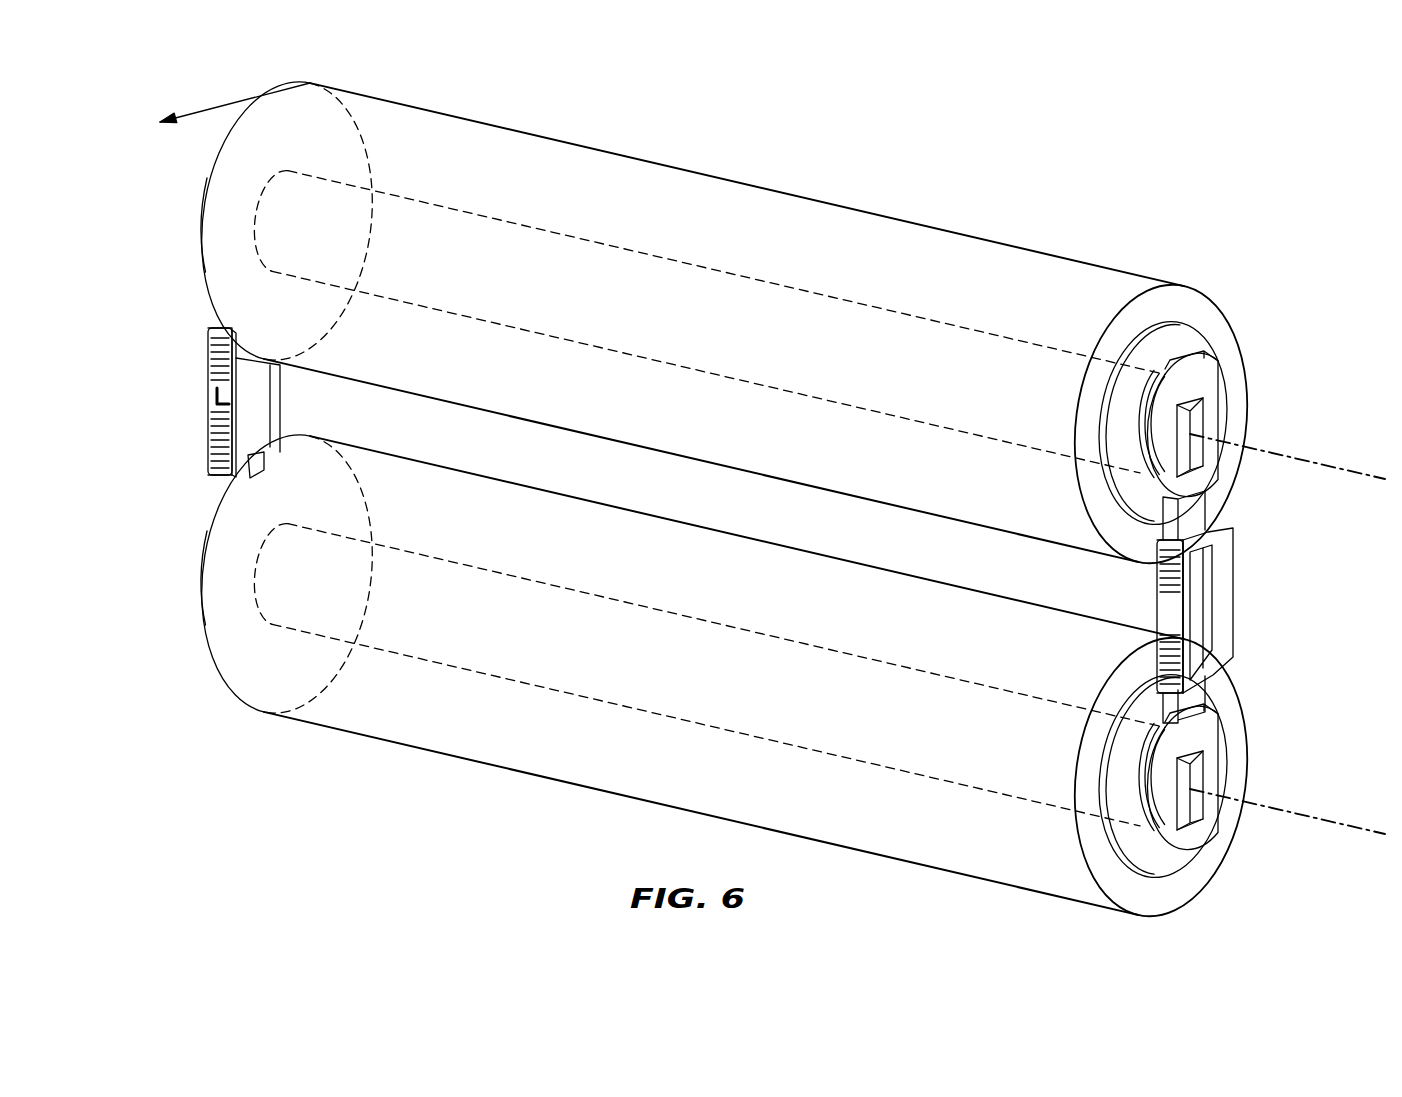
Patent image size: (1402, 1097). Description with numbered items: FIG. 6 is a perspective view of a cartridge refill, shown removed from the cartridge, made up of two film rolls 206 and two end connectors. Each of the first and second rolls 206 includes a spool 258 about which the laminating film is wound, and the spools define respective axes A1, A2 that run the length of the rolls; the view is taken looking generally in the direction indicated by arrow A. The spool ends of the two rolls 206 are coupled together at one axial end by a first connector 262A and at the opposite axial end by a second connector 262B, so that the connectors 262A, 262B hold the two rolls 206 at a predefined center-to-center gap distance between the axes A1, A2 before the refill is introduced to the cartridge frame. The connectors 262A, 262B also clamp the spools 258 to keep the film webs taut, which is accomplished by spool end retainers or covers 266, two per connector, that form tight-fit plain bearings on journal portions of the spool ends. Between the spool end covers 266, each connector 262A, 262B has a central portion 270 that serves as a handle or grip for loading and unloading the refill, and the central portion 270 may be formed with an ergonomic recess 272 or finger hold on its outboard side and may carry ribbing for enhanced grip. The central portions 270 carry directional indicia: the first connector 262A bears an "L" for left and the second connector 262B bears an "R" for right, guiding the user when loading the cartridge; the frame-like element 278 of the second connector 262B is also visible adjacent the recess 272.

The film roll 206 is at (955, 233).
The spool 258 is at (640, 252).
The first connector 262A is at (191, 393).
The second connector 262B is at (1256, 607).
The spool end retainer 266 is at (1205, 378).
The central portion 270 is at (205, 441).
The recess 272 is at (1203, 628).
The frame 278 is at (1233, 603).
The direction A is at (235, 117).
The axis A1 is at (1306, 456).
The axis A2 is at (1306, 806).